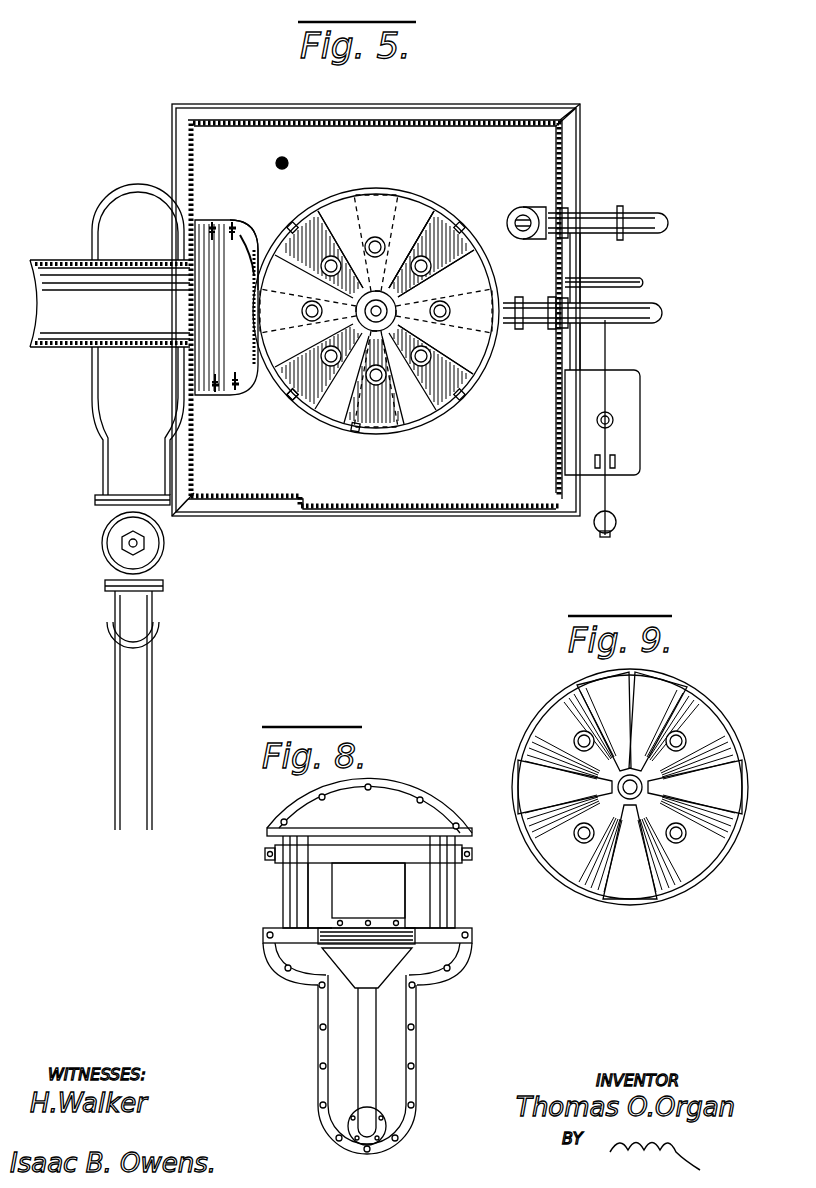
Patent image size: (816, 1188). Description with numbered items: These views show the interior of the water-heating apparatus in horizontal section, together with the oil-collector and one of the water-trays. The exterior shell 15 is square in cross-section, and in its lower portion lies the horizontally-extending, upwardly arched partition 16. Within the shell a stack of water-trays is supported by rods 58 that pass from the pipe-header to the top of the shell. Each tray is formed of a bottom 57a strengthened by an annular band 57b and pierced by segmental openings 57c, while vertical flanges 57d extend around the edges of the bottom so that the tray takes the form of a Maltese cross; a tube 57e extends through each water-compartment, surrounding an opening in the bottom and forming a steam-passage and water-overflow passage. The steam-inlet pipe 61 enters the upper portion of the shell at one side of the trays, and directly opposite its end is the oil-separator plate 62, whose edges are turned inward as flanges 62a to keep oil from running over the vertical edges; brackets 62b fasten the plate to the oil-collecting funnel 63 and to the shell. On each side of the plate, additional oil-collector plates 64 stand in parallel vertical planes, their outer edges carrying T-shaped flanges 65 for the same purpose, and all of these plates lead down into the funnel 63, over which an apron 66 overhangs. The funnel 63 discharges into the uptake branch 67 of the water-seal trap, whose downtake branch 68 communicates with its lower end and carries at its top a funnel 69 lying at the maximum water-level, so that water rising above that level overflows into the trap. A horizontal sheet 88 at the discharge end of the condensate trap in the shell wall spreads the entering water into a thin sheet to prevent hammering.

In FIG. 5, the exterior shell 15 is at (578, 172).
In FIG. 5, the partition 16 is at (376, 310).
In FIG. 5, the bottom 57a is at (337, 218).
In FIG. 9, the bottom 57a is at (693, 722).
In FIG. 5, the annular band 57b is at (478, 255).
In FIG. 9, the annular band 57b is at (645, 674).
In FIG. 5, the segmental openings 57c is at (438, 246).
In FIG. 9, the segmental openings 57c is at (630, 759).
In FIG. 5, the vertical flanges 57d is at (393, 205).
In FIG. 5, the tube 57e is at (375, 238).
In FIG. 9, the tube 57e is at (574, 741).
In FIG. 5, the rods 58 is at (470, 222).
In FIG. 5, the steam-inlet pipe 61 is at (110, 303).
In FIG. 5, the plate 62 is at (255, 318).
In FIG. 8, the plate 62 is at (366, 903).
In FIG. 5, the flanges 62a is at (250, 262).
In FIG. 8, the brackets 62b is at (476, 876).
In FIG. 5, the oil-collecting funnel 63 is at (280, 229).
In FIG. 8, the oil-collecting funnel 63 is at (428, 960).
In FIG. 5, the oil-collector plates 64 is at (232, 225).
In FIG. 8, the oil-collector plates 64 is at (302, 893).
In FIG. 5, the T-shaped flanges 65 is at (212, 230).
In FIG. 8, the T-shaped flanges 65 is at (312, 916).
In FIG. 8, the apron 66 is at (369, 807).
In FIG. 8, the uptake branch 67 is at (392, 1089).
In FIG. 8, the downtake branch 68 is at (372, 1064).
In FIG. 8, the funnel 69 is at (367, 968).
In FIG. 5, the horizontal sheet 88 is at (524, 214).